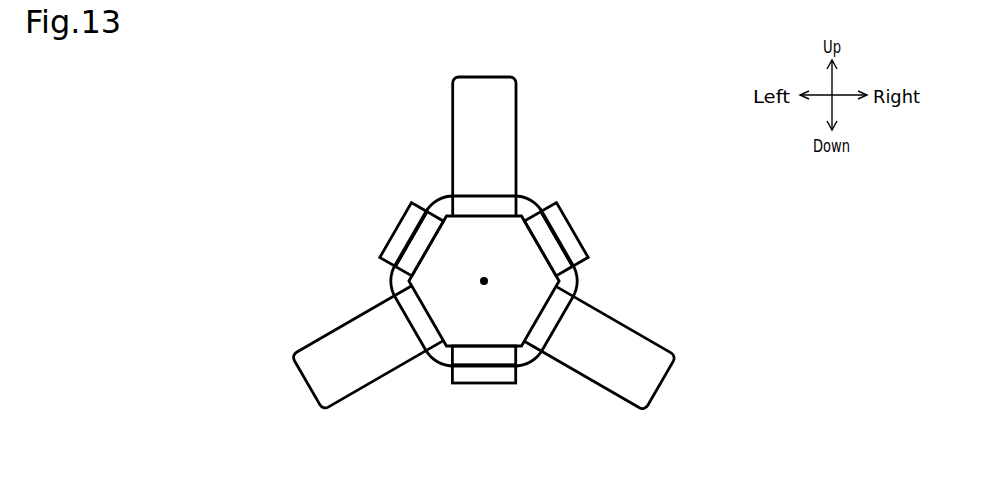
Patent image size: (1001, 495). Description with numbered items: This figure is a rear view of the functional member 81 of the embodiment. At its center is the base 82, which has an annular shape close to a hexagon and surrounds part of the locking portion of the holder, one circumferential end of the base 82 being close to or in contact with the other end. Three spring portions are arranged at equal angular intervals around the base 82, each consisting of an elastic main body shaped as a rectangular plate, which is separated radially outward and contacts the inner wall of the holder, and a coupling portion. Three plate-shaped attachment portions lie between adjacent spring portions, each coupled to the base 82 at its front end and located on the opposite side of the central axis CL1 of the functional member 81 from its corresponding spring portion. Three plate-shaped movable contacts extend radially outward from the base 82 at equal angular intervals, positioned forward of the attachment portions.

The functional member 81 is at (316, 103).
The base 82 is at (582, 283).
The central axis CL1 is at (480, 282).